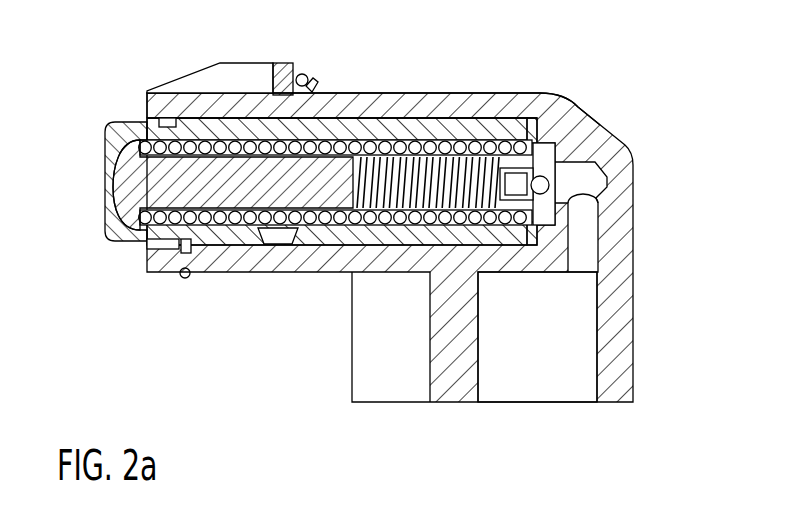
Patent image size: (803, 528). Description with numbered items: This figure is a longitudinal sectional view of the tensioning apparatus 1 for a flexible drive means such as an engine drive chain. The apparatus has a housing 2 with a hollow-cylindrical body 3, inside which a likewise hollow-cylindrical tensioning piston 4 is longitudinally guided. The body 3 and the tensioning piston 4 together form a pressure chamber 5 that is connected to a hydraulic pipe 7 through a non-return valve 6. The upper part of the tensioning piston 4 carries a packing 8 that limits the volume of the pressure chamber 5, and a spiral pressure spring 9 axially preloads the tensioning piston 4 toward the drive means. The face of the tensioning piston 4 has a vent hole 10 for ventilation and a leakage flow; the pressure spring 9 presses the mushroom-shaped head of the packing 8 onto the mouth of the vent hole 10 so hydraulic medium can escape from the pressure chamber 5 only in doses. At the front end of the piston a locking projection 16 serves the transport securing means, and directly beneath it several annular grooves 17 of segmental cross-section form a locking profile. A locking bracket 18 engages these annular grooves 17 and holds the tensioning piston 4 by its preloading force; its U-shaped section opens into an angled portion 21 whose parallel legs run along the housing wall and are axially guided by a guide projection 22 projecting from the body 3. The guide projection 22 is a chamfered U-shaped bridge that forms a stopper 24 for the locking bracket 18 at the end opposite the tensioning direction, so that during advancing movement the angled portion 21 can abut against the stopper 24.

The tensioning apparatus 1 is at (365, 201).
The housing 2 is at (616, 256).
The hollow-cylindrical body 3 is at (523, 105).
The tensioning piston 4 is at (107, 132).
The pressure chamber 5 is at (567, 233).
The non-return valve 6 is at (488, 135).
The hydraulic pipe 7 is at (573, 358).
The packing 8 is at (230, 240).
The spiral pressure spring 9 is at (373, 138).
The vent hole 10 is at (107, 181).
The locking projection 16 is at (150, 252).
The annular grooves 17 is at (279, 244).
The locking bracket 18 is at (197, 130).
The angled portion 21 is at (312, 86).
The guide projection 22 is at (278, 66).
The stopper 24 is at (303, 73).